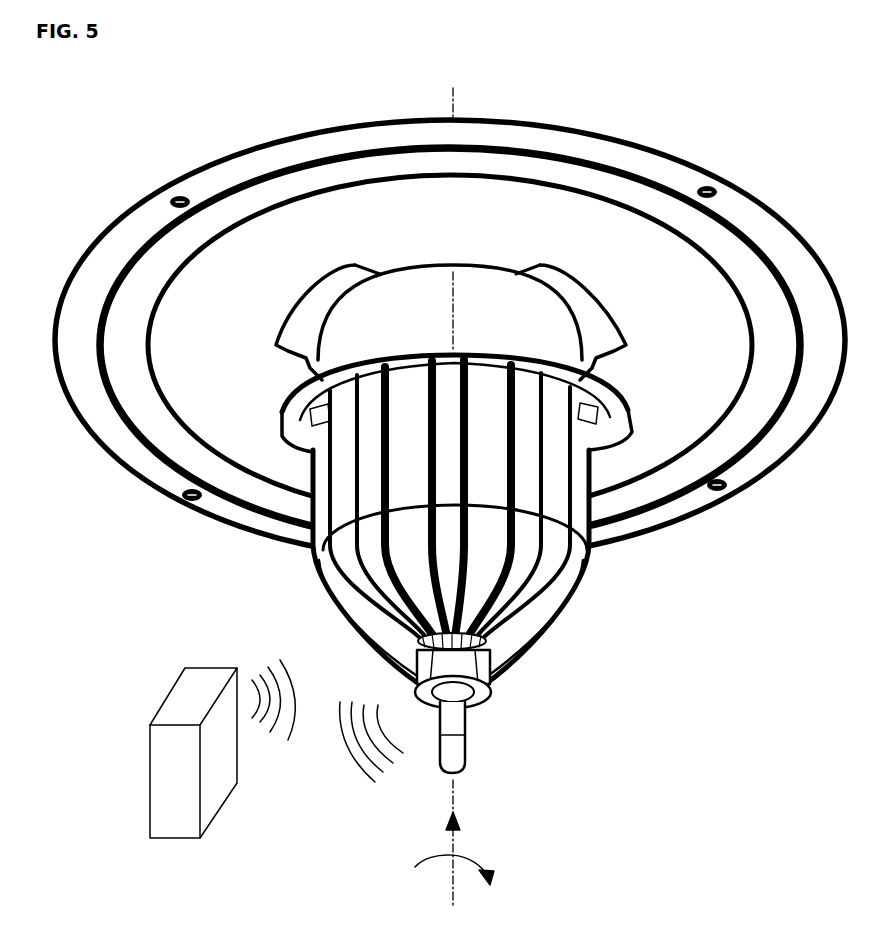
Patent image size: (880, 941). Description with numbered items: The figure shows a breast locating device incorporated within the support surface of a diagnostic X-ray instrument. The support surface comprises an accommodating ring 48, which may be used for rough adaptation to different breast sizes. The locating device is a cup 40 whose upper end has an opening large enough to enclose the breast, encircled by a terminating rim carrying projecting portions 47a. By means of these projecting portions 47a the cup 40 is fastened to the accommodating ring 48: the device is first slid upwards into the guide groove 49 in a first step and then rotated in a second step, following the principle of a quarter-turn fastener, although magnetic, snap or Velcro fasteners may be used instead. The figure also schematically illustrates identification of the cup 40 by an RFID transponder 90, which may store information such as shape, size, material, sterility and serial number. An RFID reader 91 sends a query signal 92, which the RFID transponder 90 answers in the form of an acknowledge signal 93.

The accommodating ring 48 is at (486, 218).
The guide groove 49 is at (290, 345).
The projecting portions 47a is at (297, 409).
The cup 40 is at (330, 634).
The RFID transponder 90 is at (483, 703).
The RFID reader 91 is at (175, 810).
The query signal 92 is at (270, 714).
The acknowledge signal 93 is at (357, 758).